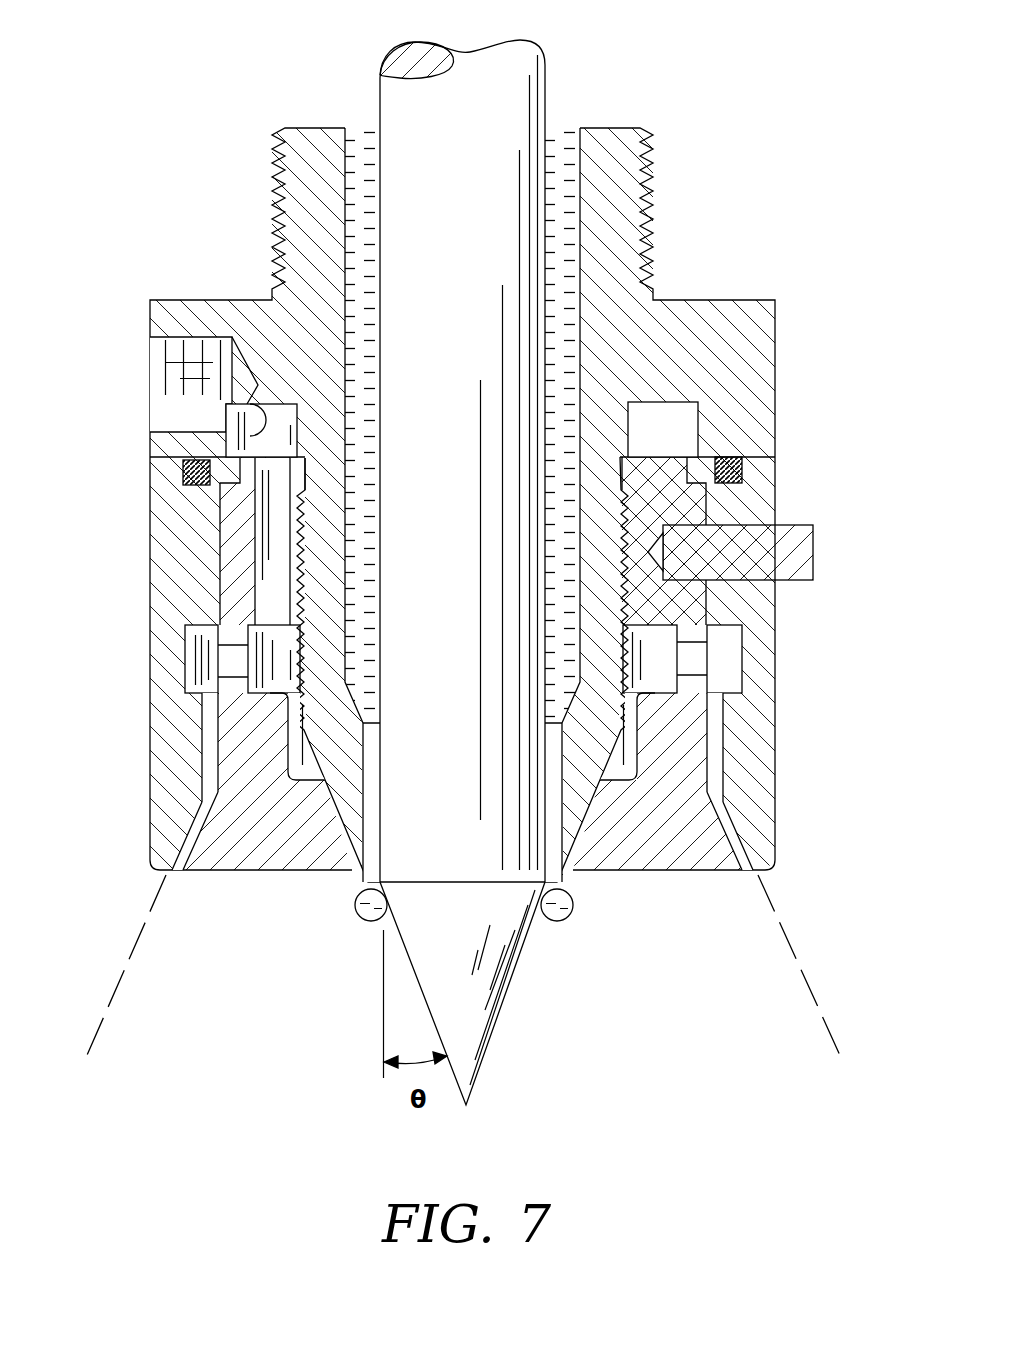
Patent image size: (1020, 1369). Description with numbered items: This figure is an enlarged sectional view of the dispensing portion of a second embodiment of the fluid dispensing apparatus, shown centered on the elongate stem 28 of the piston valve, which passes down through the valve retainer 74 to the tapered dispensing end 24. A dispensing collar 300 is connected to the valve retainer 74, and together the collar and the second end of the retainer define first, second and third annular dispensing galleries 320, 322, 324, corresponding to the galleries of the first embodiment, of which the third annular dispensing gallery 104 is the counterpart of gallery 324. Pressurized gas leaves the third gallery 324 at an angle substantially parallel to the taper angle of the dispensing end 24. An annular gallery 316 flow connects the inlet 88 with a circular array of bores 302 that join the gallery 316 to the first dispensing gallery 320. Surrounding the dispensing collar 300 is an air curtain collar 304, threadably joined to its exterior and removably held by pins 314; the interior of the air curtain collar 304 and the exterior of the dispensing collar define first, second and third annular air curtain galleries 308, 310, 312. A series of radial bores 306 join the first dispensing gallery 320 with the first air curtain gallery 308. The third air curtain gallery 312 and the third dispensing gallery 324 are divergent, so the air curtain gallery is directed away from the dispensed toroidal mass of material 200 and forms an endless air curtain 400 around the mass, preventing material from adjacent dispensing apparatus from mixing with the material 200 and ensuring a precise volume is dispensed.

The elongate stem 28 is at (513, 58).
The valve retainer 74 is at (615, 187).
The inlet 88 is at (163, 345).
The annular gallery 316 is at (235, 432).
The pins 314 is at (787, 550).
The bores 302 is at (255, 550).
The first annular air curtain gallery 308 is at (238, 636).
The radial bores 306 is at (247, 650).
The air curtain collar 304 is at (167, 725).
The second annular air curtain gallery 310 is at (205, 780).
The third annular air curtain gallery 312 is at (187, 832).
The first annular dispensing gallery 320 is at (285, 692).
The second annular dispensing gallery 322 is at (290, 745).
The third annular dispensing gallery 324 is at (355, 810).
The third annular dispensing gallery 104 is at (562, 820).
The dispensing collar 300 is at (680, 843).
The toroidal mass of material 200 is at (367, 915).
The dispensing end 24 is at (508, 998).
The air curtain 400 is at (100, 1030).